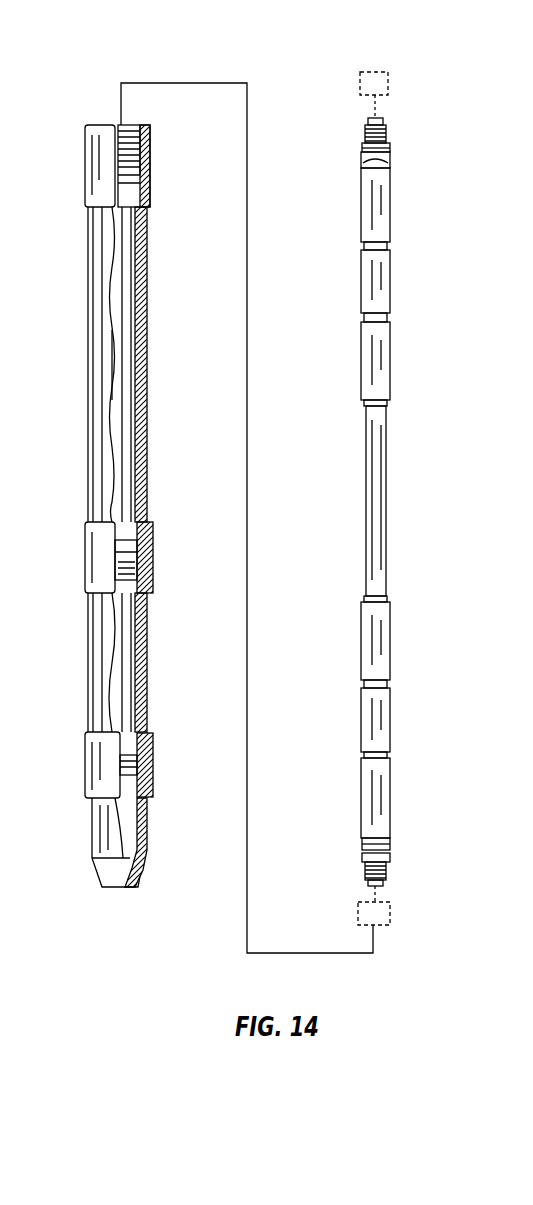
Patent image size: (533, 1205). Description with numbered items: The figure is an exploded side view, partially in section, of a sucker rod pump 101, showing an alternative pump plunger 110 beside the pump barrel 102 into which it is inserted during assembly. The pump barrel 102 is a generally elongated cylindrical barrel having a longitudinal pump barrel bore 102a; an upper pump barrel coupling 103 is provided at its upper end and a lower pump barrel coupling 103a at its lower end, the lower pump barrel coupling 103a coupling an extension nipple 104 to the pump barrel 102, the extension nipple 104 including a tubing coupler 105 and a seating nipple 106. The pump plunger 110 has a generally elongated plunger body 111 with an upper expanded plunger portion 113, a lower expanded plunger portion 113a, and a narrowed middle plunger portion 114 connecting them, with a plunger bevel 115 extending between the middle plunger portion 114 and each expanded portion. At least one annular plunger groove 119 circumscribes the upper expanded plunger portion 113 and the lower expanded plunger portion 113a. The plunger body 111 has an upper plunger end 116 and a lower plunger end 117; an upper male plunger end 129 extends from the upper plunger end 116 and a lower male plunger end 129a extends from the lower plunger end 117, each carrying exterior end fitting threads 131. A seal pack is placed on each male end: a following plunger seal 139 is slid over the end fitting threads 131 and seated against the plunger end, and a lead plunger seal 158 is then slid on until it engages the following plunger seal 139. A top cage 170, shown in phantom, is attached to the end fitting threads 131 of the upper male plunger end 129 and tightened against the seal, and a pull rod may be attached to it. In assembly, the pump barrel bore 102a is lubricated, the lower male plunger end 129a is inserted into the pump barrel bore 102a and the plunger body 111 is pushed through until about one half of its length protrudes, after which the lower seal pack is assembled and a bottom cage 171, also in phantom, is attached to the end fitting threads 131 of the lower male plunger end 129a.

The sucker rod pump 101 is at (192, 52).
The pump barrel 102 is at (148, 298).
The pump barrel bore 102a is at (124, 385).
The upper pump barrel coupling 103 is at (150, 165).
The lower pump barrel coupling 103a is at (150, 783).
The extension nipple 104 is at (150, 877).
The tubing coupler 105 is at (100, 762).
The seating nipple 106 is at (105, 835).
The pump plunger 110 is at (465, 240).
The plunger body 111 is at (395, 375).
The upper expanded plunger portion 113 is at (385, 378).
The lower expanded plunger portion 113a is at (383, 642).
The narrowed middle plunger portion 114 is at (388, 480).
The plunger bevel 115 is at (385, 405).
The upper plunger end 116 is at (390, 158).
The lower plunger end 117 is at (390, 850).
The annular plunger groove 119 is at (385, 310).
The upper male plunger end 129 is at (363, 133).
The lower male plunger end 129a is at (390, 872).
The exterior end fitting threads 131 is at (388, 140).
The following plunger seal 139 is at (362, 164).
The lead plunger seal 158 is at (362, 147).
The top cage 170 is at (388, 87).
The bottom cage 171 is at (390, 912).